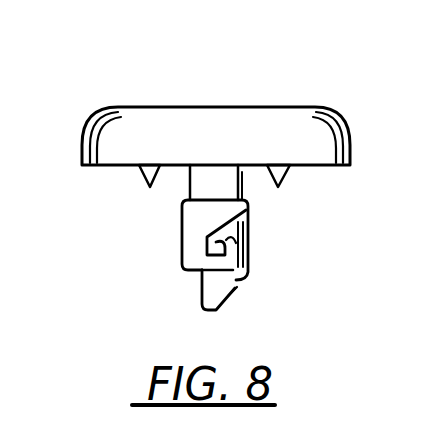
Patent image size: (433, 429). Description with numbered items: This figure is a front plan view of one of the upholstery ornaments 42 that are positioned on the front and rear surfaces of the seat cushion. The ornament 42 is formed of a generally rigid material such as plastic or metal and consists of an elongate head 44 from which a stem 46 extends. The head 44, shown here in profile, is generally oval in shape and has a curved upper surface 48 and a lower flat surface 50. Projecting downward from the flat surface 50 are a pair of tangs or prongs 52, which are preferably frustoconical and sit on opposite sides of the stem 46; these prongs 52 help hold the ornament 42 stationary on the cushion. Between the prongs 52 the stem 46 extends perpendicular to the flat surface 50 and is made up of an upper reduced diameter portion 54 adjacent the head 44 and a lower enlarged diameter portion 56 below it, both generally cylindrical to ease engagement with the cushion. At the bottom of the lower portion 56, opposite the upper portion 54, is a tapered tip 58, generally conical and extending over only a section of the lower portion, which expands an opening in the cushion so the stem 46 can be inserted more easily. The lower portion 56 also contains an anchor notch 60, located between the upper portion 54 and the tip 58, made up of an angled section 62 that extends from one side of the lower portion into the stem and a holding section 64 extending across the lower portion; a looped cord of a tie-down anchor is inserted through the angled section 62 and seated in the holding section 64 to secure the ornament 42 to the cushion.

The upholstery ornament 42 is at (207, 32).
The head 44 is at (320, 101).
The curved upper surface 48 is at (248, 106).
The lower flat surface 50 is at (95, 168).
The tangs or prongs 52 is at (143, 182).
The upper reduced diameter portion 54 is at (189, 190).
The stem 46 is at (170, 252).
The anchor notch 60 is at (196, 235).
The angled section 62 is at (249, 213).
The holding section 64 is at (249, 257).
The lower enlarged diameter portion 56 is at (183, 268).
The tapered tip 58 is at (223, 300).